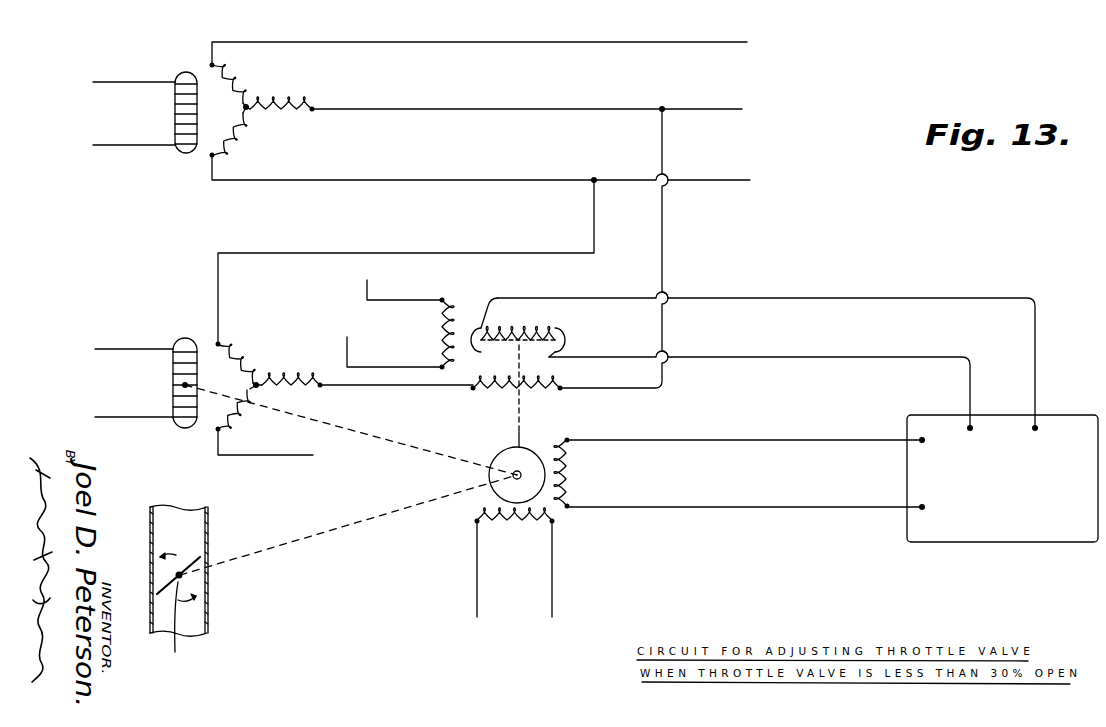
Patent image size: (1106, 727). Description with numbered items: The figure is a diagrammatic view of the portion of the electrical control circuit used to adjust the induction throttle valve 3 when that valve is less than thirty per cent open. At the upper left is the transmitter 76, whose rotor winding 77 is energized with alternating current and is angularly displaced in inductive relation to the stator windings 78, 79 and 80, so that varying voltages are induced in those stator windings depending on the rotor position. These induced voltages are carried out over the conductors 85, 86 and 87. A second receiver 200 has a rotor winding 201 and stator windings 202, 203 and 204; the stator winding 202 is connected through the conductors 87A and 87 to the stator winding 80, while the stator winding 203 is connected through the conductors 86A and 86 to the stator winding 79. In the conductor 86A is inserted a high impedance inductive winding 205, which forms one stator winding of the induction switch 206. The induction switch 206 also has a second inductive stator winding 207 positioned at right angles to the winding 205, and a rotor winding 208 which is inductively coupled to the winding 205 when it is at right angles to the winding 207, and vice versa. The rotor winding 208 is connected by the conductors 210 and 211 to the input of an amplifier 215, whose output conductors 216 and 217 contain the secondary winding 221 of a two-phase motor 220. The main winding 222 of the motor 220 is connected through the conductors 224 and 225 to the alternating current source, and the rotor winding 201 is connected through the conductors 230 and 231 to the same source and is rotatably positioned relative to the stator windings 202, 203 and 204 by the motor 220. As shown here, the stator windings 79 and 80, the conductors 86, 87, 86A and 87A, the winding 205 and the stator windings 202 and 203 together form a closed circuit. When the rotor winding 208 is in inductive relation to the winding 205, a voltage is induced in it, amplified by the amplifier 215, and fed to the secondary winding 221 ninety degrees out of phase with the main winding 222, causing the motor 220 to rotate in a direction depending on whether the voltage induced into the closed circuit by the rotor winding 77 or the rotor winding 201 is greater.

The throttle valve 3 is at (183, 572).
The transmitter 76 is at (238, 135).
The rotor winding 77 is at (174, 106).
The stator winding 78 is at (236, 84).
The stator winding 79 is at (290, 109).
The stator winding 80 is at (236, 142).
The conductor 85 is at (463, 42).
The conductor 86 is at (486, 109).
The conductor 87 is at (476, 180).
The conductor 87A is at (507, 241).
The conductor 86A is at (404, 385).
The second receiver 200 is at (152, 409).
The rotor winding 201 is at (172, 385).
The stator winding 202 is at (240, 358).
The stator winding 203 is at (290, 385).
The stator winding 204 is at (240, 419).
The high impedance inductive winding 205 is at (503, 395).
The induction switch 206 is at (578, 289).
The second inductive stator winding 207 is at (432, 336).
The rotor winding 208 is at (492, 352).
The conductor 210 is at (740, 298).
The conductor 211 is at (755, 357).
The amplifier 215 is at (1024, 485).
The output conductor 216 is at (757, 440).
The output conductor 217 is at (752, 507).
The two-phase motor 220 is at (570, 518).
The secondary winding 221 is at (574, 466).
The main winding 222 is at (521, 565).
The conductor 224 is at (477, 573).
The conductor 225 is at (552, 574).
The conductor 230 is at (113, 349).
The conductor 231 is at (113, 417).